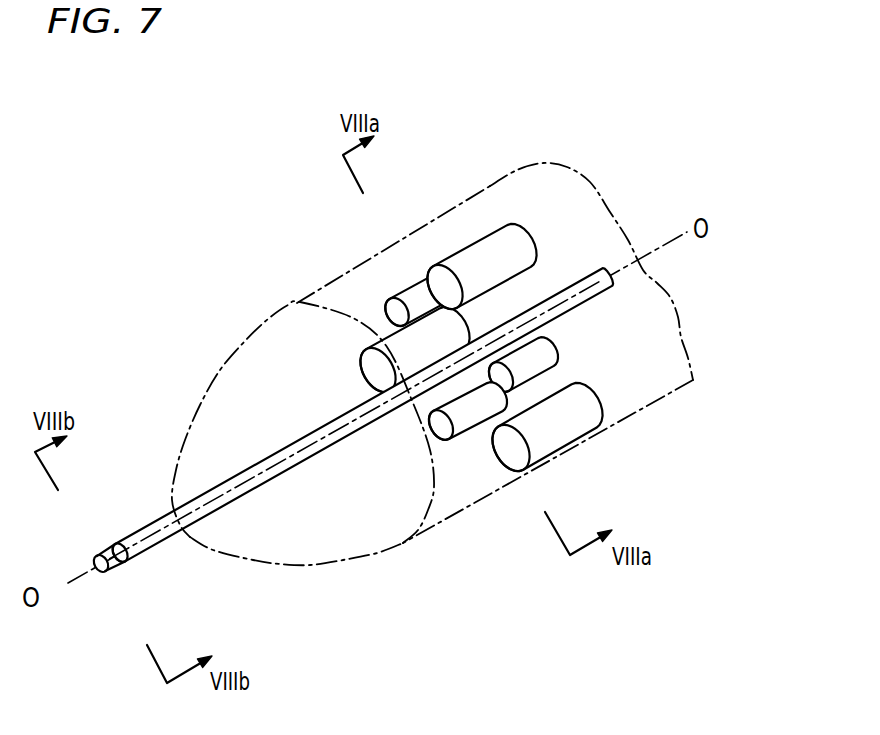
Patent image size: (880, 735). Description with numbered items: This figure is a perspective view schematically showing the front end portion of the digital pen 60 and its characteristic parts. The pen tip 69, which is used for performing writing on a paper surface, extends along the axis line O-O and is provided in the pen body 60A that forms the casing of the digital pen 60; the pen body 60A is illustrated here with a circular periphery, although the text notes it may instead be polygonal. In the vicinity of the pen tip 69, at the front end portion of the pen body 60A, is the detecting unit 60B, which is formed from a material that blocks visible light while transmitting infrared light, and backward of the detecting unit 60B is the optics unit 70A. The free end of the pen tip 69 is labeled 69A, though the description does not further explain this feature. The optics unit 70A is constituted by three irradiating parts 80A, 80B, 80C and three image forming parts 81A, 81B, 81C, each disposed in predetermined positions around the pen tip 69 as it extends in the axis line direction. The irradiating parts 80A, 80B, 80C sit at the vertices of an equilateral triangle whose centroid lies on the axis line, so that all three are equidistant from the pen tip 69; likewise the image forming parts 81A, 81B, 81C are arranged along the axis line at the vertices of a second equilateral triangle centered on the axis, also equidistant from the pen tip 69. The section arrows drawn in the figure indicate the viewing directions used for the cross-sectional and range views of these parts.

The digital pen 60 is at (432, 347).
The pen body 60A is at (330, 293).
The detecting unit 60B is at (303, 537).
The pen tip 69 is at (345, 461).
The rod tip 69A is at (100, 572).
The optics unit 70A is at (375, 267).
The irradiating part 80A is at (447, 255).
The irradiating part 80B is at (397, 350).
The irradiating part 80C is at (565, 433).
The image forming part 81A is at (462, 417).
The image forming part 81B is at (543, 359).
The image forming part 81C is at (407, 298).